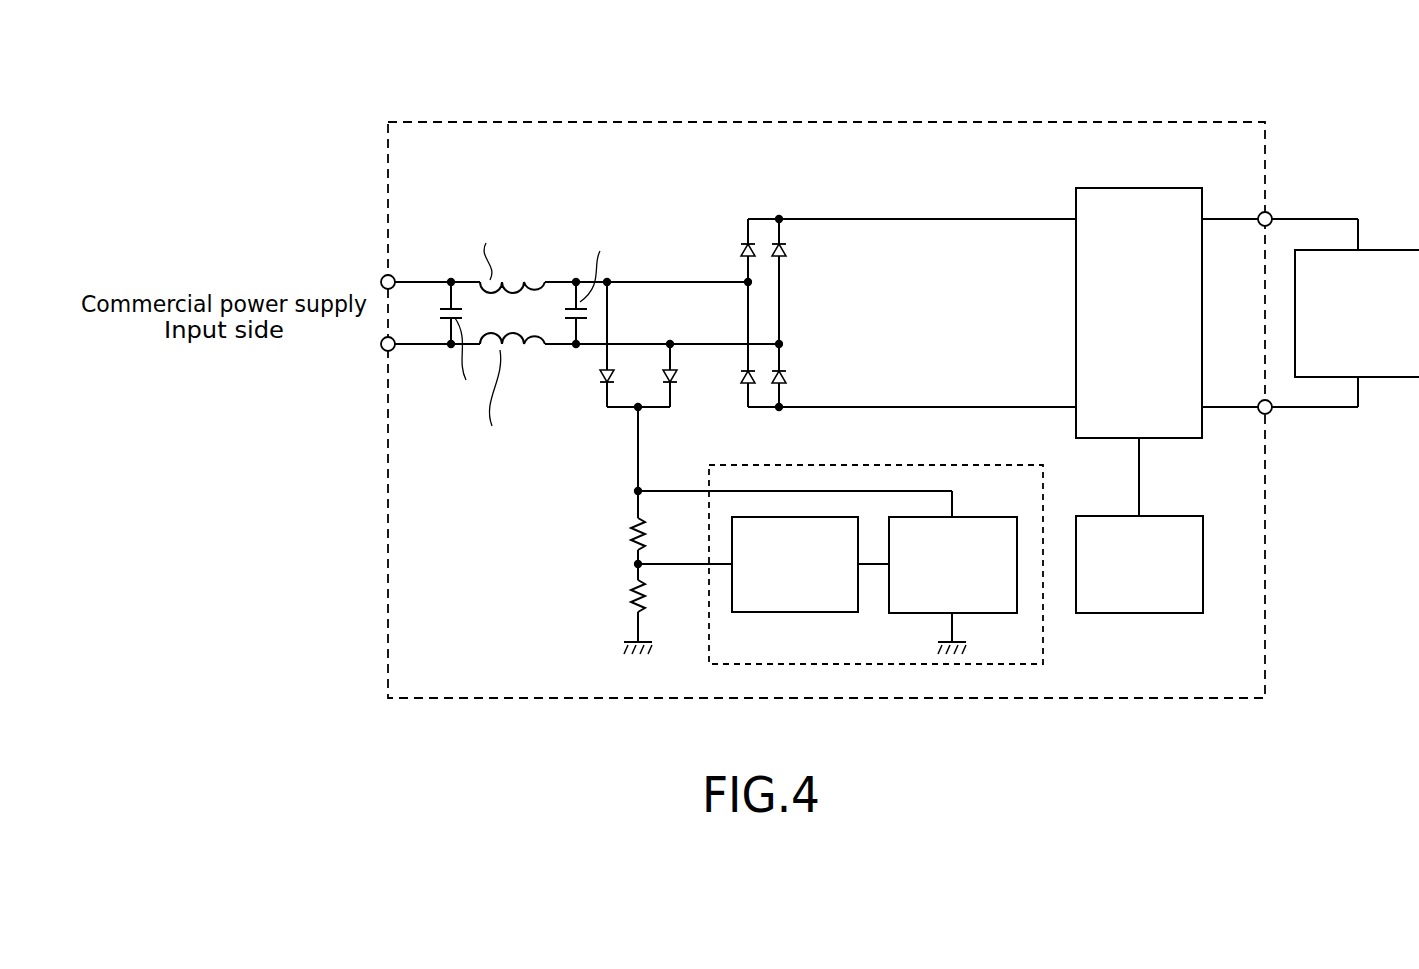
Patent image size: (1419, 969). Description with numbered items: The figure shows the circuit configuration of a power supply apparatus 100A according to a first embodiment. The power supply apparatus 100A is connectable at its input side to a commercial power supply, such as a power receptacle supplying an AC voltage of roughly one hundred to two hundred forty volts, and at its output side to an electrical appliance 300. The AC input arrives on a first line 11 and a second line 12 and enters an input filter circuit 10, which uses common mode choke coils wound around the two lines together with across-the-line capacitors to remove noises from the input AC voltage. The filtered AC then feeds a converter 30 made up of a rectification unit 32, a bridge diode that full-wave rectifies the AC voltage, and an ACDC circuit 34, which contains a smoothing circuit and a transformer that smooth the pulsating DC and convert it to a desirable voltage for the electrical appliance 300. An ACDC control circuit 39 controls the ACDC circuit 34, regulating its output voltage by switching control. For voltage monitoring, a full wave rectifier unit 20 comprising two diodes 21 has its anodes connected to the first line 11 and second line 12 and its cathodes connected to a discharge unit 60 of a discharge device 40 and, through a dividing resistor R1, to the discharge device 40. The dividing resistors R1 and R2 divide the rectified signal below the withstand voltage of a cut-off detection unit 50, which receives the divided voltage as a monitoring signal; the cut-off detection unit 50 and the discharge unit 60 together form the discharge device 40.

The power supply apparatus 100A is at (476, 120).
The input filter circuit 10 is at (514, 272).
The first line 11 is at (420, 280).
The second line 12 is at (420, 347).
The full wave rectifier unit 20 is at (628, 354).
The diode 21 is at (603, 402).
The converter 30 is at (980, 369).
The rectification unit 32 is at (789, 283).
The ACDC circuit 34 is at (1076, 314).
The ACDC control circuit 39 is at (1180, 516).
The discharge device 40 is at (840, 547).
The cut-off detection unit 50 is at (800, 614).
The discharge unit 60 is at (928, 614).
The electrical appliance 300 is at (1393, 249).
The dividing resistor R1 is at (630, 530).
The dividing resistor R2 is at (630, 594).